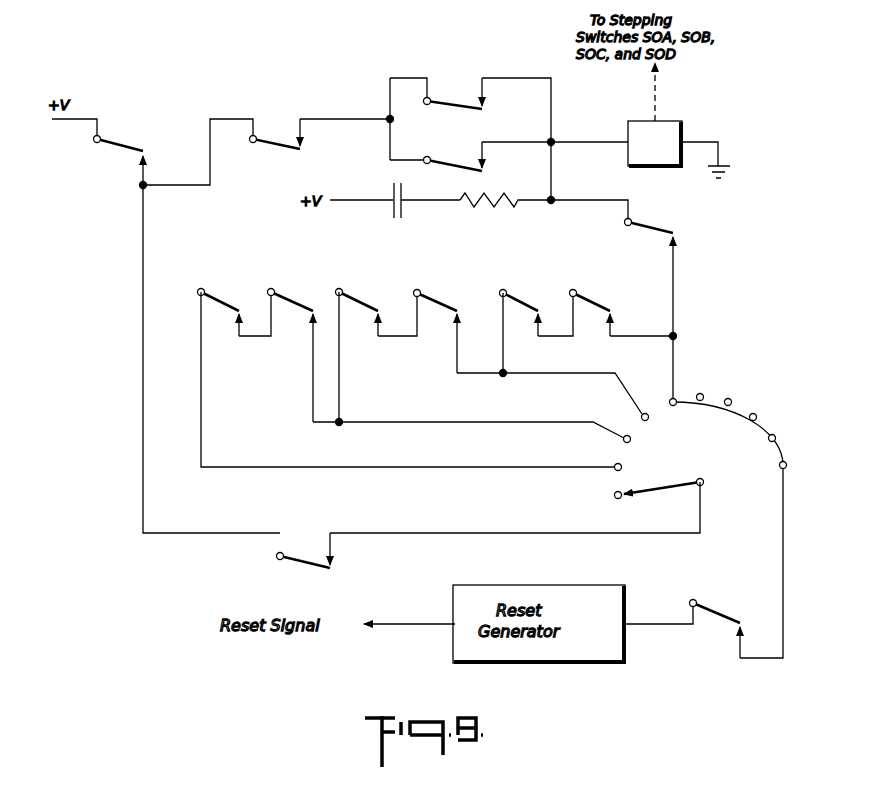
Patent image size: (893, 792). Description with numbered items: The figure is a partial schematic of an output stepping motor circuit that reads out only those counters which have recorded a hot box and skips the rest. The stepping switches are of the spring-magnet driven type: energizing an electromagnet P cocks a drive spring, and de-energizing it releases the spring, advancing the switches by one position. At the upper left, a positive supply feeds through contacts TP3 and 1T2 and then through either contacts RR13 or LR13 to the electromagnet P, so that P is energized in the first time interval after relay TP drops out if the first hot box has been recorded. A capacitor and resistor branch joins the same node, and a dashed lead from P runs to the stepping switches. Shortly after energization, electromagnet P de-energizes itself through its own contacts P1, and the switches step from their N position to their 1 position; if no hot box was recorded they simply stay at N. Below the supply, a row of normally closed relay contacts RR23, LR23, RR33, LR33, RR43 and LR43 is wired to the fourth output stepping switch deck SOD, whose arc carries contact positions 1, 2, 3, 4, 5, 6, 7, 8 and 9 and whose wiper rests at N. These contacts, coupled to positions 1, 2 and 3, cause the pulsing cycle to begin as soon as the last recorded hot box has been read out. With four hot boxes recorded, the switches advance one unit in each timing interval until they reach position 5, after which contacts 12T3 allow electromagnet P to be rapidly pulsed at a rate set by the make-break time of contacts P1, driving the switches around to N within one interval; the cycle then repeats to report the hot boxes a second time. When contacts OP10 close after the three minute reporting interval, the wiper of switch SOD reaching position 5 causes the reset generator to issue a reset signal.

The contacts TP3 is at (119, 151).
The contacts 1T2 is at (275, 122).
The contacts RR13 is at (453, 81).
The contacts LR13 is at (453, 152).
The electromagnet P is at (679, 120).
The contacts P1 is at (649, 300).
The contacts RR23 is at (228, 301).
The contacts LR23 is at (293, 344).
The contacts RR33 is at (358, 301).
The contacts LR33 is at (436, 320).
The contacts RR43 is at (523, 301).
The contacts LR43 is at (594, 301).
The fourth output stepping switch deck SOD is at (558, 526).
The position 1 of switch SOD 1 is at (624, 467).
The position 2 of switch SOD 2 is at (633, 443).
The position 3 of switch SOD 3 is at (651, 423).
The position 4 of switch SOD 4 is at (672, 411).
The position 5 of switch SOD 5 is at (699, 405).
The position 6 of switch SOD 6 is at (725, 410).
The position 7 of switch SOD 7 is at (747, 425).
The position 8 of switch SOD 8 is at (765, 445).
The position 9 of switch SOD 9 is at (775, 468).
The N position N is at (718, 492).
The contacts 12T3 is at (304, 539).
The contacts OP10 is at (715, 621).